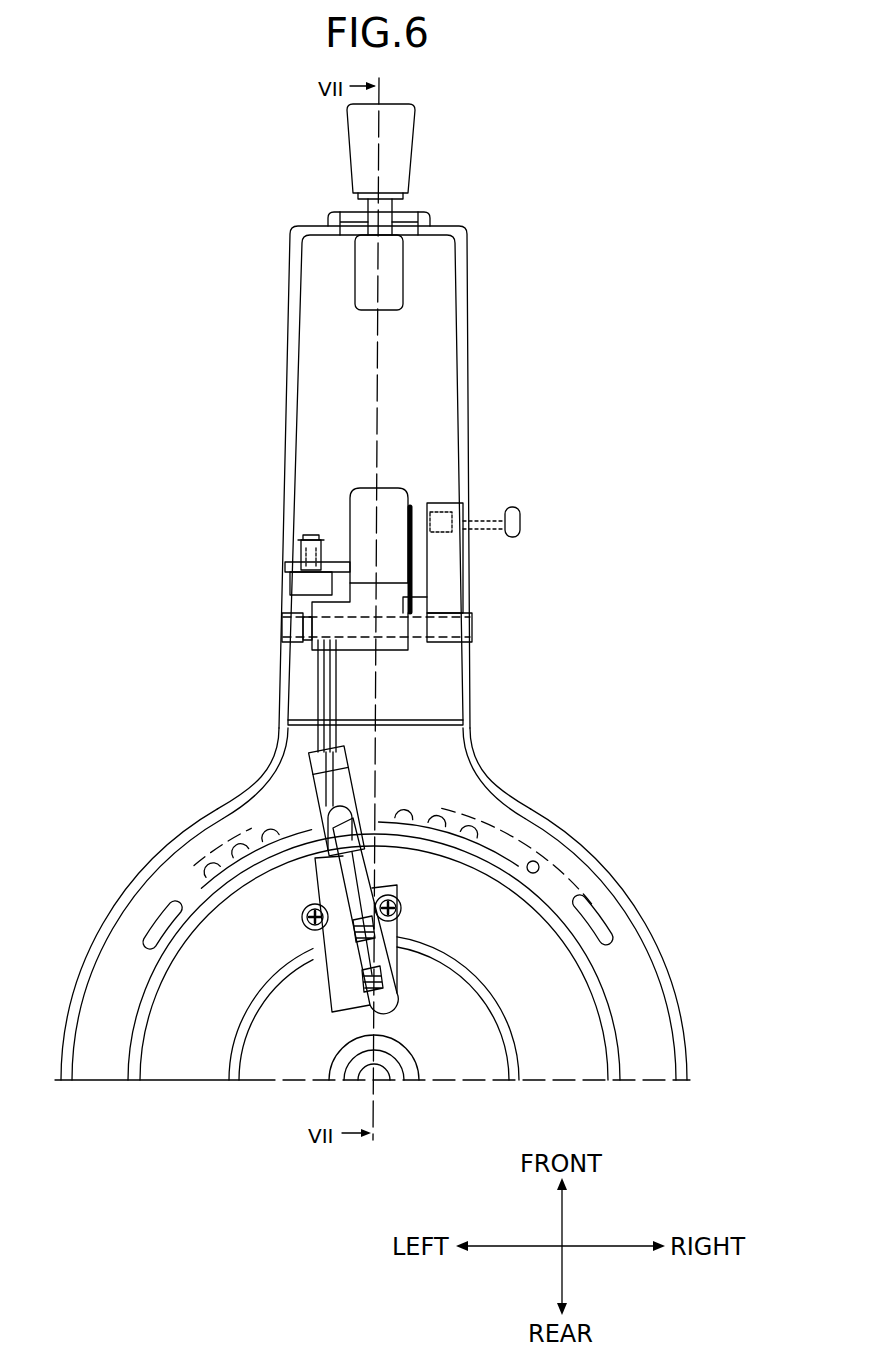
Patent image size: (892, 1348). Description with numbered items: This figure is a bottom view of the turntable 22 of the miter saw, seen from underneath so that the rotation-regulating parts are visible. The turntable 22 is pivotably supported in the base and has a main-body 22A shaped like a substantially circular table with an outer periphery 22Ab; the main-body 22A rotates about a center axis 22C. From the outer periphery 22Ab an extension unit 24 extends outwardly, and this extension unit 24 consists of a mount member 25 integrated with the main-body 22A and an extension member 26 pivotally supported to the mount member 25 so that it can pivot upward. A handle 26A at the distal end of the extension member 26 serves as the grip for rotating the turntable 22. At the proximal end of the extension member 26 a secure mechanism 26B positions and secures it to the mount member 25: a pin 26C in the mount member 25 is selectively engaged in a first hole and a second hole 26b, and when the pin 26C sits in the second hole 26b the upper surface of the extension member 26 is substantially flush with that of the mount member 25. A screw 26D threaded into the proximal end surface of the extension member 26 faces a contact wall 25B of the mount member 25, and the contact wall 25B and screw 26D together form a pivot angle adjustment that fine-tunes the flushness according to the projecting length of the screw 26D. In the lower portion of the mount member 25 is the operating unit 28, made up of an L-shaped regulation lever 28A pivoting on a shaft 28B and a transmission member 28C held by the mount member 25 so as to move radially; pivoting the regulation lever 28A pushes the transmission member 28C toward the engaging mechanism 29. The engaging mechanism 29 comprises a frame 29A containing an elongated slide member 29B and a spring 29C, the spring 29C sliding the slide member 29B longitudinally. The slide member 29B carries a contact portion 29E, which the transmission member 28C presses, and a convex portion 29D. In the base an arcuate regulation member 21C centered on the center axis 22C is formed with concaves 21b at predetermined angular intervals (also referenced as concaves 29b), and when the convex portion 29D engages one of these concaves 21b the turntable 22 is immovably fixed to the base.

The handle 26A is at (405, 150).
The extension member 26 is at (450, 304).
The regulation lever 28A is at (400, 498).
The second hole 26b is at (448, 515).
The pin 26C is at (522, 523).
The secure mechanism 26B is at (470, 555).
The operating unit 28 is at (440, 572).
The screw 26D is at (300, 548).
The contact wall 25B is at (317, 583).
The extension unit 24 is at (472, 607).
The shaft 28B is at (472, 632).
The mount member 25 is at (448, 687).
The transmission member 28C is at (318, 690).
The concaves 29b is at (311, 764).
The contact portion 29E is at (310, 752).
The slide member 29B is at (328, 818).
The engaging mechanism 29 is at (320, 903).
The convex portion 29D is at (380, 810).
The spring 29C is at (395, 982).
The frame 29A is at (343, 963).
The turntable 22 is at (552, 789).
The outer periphery 22Ab is at (220, 803).
The main-body 22A is at (567, 827).
The concaves 21b is at (392, 826).
The regulation member 21C is at (593, 923).
The center axis 22C is at (386, 1084).